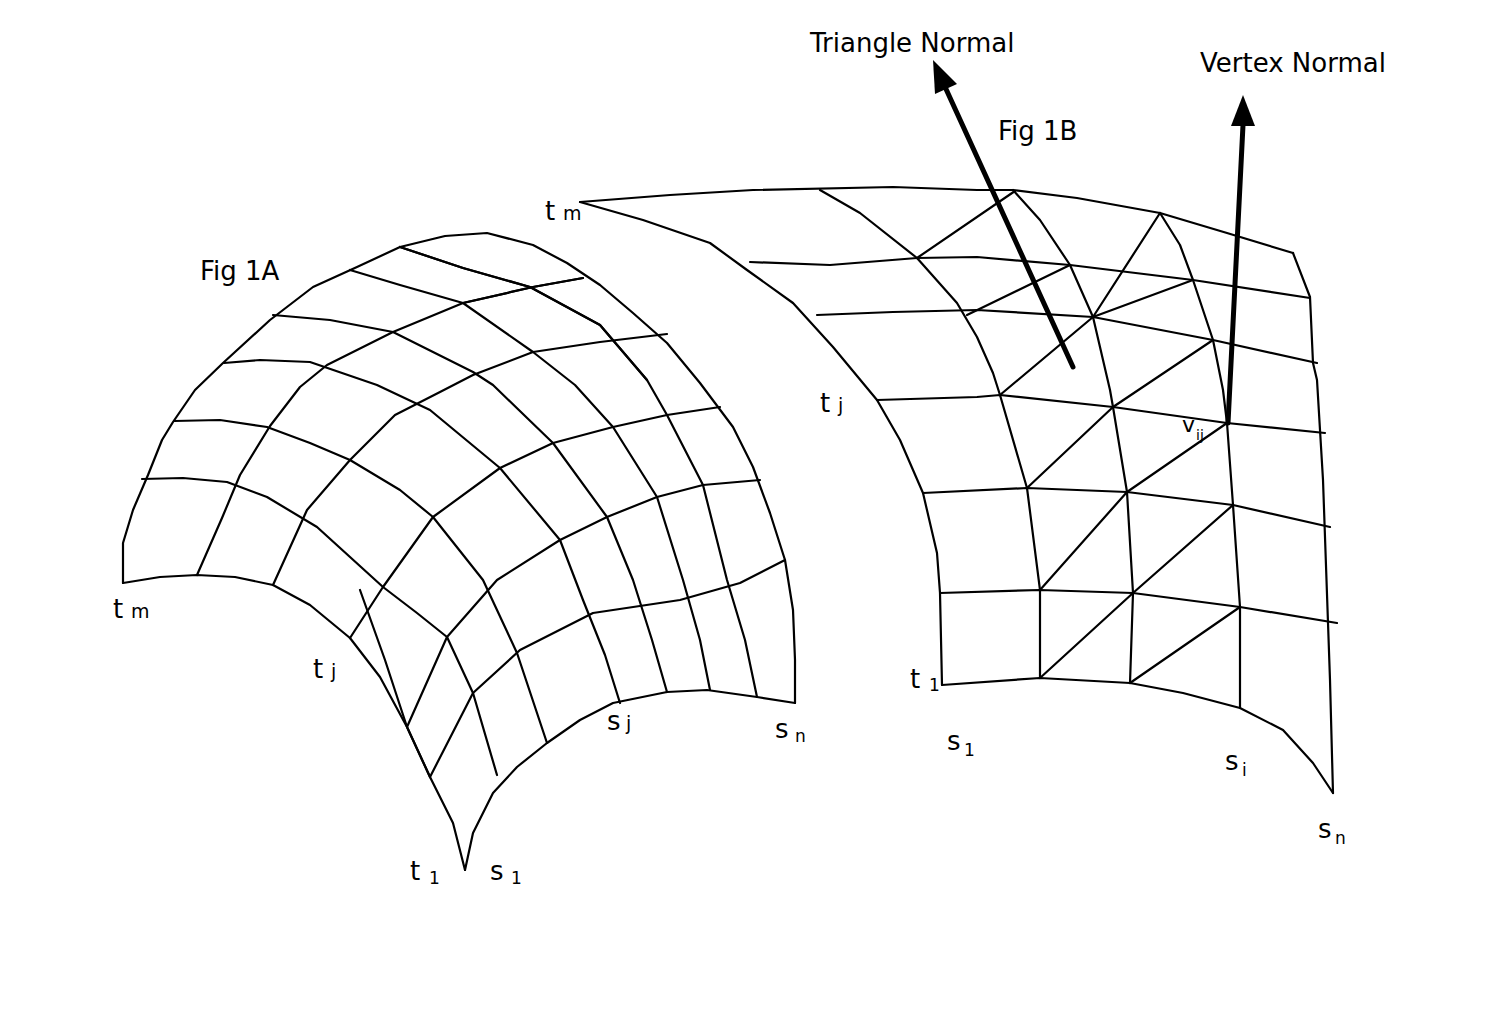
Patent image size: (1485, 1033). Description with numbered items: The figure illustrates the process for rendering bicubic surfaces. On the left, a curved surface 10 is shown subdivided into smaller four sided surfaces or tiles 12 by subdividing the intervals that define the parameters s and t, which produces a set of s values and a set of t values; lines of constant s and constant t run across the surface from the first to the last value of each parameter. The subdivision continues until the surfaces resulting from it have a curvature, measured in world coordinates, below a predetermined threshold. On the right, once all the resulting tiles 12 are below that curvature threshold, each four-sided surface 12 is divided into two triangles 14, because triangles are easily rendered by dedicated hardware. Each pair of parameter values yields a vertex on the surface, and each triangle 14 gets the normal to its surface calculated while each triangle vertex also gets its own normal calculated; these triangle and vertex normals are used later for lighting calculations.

In FIG. 1A, the curved surface 10 is at (181, 384).
In FIG. 1A, the four sided surfaces or tiles 12 is at (632, 314).
In FIG. 1B, the four sided surfaces or tiles 12 is at (1285, 461).
In FIG. 1B, the triangles 14 is at (1175, 688).